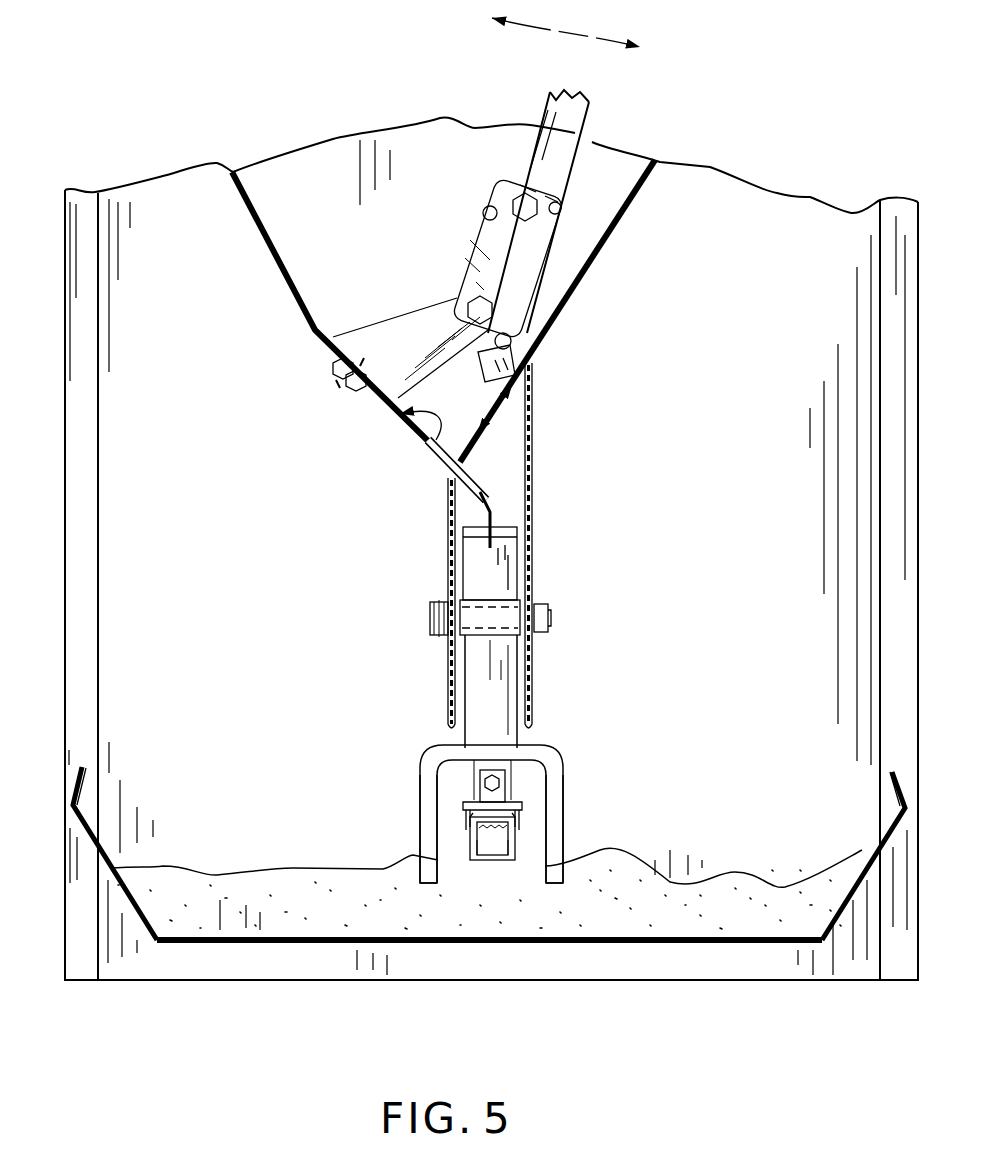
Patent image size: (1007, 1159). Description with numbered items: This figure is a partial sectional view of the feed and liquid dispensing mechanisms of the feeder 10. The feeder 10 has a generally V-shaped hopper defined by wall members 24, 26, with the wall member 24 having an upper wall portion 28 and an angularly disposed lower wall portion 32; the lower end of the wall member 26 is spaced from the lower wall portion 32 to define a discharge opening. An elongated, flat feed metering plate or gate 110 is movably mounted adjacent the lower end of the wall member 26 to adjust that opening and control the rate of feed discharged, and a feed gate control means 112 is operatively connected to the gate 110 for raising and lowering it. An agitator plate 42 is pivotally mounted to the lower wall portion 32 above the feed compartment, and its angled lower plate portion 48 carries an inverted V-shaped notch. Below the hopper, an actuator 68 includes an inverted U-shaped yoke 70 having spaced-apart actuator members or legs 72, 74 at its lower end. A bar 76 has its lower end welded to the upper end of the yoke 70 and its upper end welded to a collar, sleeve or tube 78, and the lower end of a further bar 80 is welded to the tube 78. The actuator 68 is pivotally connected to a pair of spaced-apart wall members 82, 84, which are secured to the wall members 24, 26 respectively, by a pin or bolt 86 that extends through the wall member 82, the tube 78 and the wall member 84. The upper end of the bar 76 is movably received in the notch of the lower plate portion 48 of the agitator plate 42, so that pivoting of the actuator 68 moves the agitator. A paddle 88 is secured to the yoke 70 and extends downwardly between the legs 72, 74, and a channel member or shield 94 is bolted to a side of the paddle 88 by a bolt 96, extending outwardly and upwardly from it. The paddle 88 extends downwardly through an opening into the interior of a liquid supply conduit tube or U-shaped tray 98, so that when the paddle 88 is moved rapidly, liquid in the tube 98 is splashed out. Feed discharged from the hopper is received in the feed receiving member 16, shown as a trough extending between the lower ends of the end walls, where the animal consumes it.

The feeder 10 is at (822, 140).
The feed receiving member 16 is at (542, 950).
The wall member 24 is at (290, 306).
The wall member 26 is at (598, 266).
The upper wall portion 28 is at (270, 236).
The lower wall portion 32 is at (413, 405).
The agitator plate 42 is at (427, 438).
The lower plate portion 48 is at (492, 518).
The actuator 68 is at (492, 657).
The yoke 70 is at (499, 786).
The actuator member 72 is at (428, 775).
The actuator member 74 is at (552, 790).
The bar 76 is at (490, 696).
The tube 78 is at (505, 608).
The bar 80 is at (520, 598).
The wall member 82 is at (448, 551).
The wall member 84 is at (533, 552).
The bolt 86 is at (433, 622).
The paddle 88 is at (494, 819).
The channel member 94 is at (462, 801).
The bolt 96 is at (502, 783).
The liquid supply conduit tube 98 is at (470, 846).
The feed metering plate 110 is at (510, 388).
The feed gate control means 112 is at (560, 136).